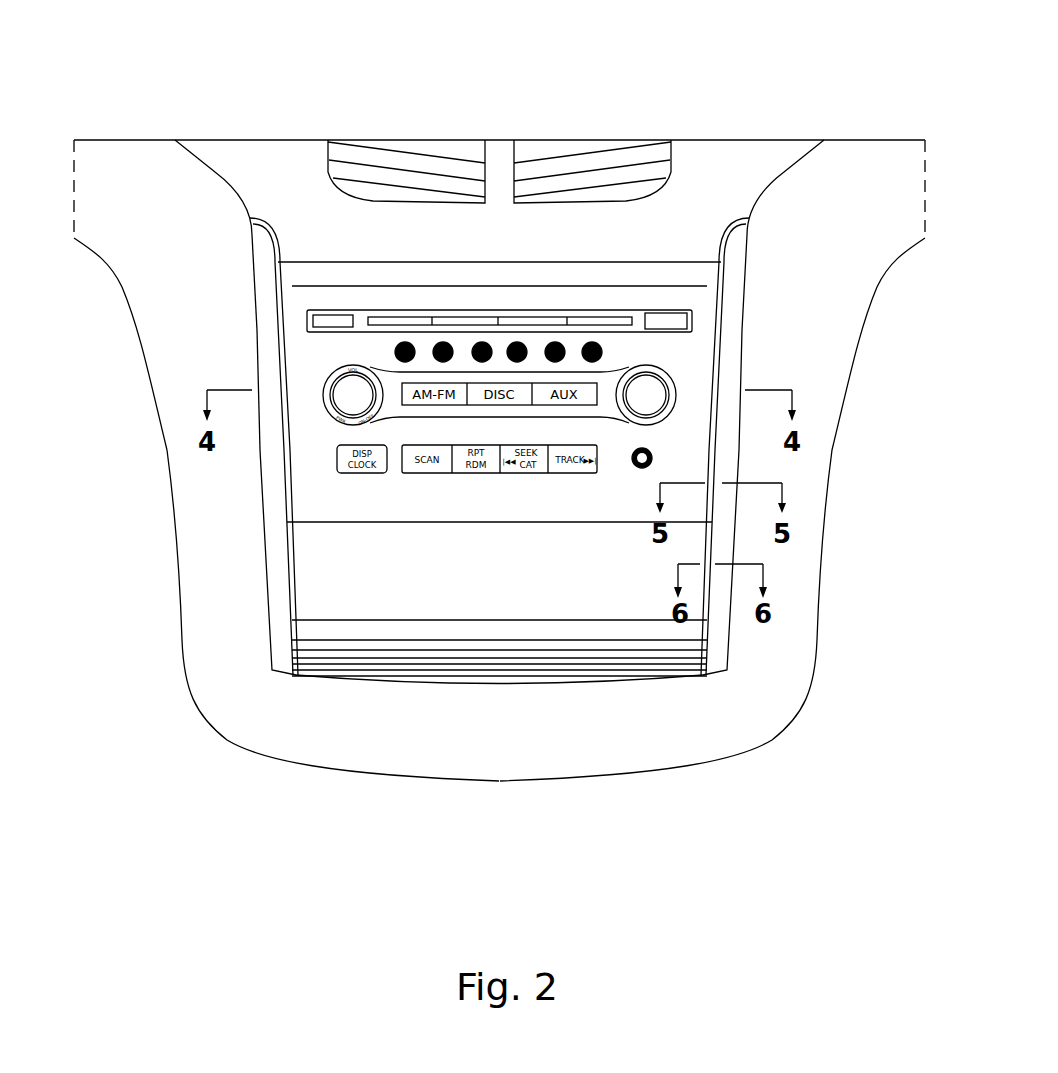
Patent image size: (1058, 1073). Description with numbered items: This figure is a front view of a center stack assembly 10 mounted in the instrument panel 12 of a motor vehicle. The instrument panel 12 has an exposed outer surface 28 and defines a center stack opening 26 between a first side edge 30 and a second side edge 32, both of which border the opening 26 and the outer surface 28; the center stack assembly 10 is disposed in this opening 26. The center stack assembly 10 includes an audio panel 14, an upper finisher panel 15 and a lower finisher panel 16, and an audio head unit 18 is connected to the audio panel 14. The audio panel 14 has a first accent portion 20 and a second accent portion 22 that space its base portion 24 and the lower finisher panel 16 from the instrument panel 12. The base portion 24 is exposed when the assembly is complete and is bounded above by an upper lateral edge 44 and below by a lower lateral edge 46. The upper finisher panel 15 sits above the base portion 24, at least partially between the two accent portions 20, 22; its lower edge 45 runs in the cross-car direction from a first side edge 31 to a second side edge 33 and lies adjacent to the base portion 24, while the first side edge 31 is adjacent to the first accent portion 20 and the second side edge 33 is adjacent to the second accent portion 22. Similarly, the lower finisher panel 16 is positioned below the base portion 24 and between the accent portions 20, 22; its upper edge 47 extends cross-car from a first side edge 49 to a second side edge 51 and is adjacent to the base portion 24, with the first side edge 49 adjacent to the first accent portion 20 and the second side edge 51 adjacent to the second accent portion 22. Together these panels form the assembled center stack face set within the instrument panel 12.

The center stack assembly 10 is at (188, 108).
The instrument panel 12 is at (177, 530).
The audio panel 14 is at (756, 256).
The upper finisher panel 15 is at (704, 138).
The lower finisher panel 16 is at (357, 692).
The audio head unit 18 is at (675, 372).
The first accent portion 20 is at (256, 262).
The second accent portion 22 is at (737, 287).
The base portion 24 is at (690, 347).
The center stack opening 26 is at (270, 630).
The outer surface 28 is at (208, 493).
The first side edge 30 is at (253, 295).
The first side edge 31 is at (225, 179).
The second side edge 32 is at (742, 373).
The second side edge 33 is at (782, 168).
The upper lateral edge 44 is at (457, 262).
The lower edge 45 is at (569, 262).
The lower lateral edge 46 is at (527, 520).
The upper edge 47 is at (505, 527).
The first side edge 49 is at (298, 577).
The second side edge 51 is at (703, 540).